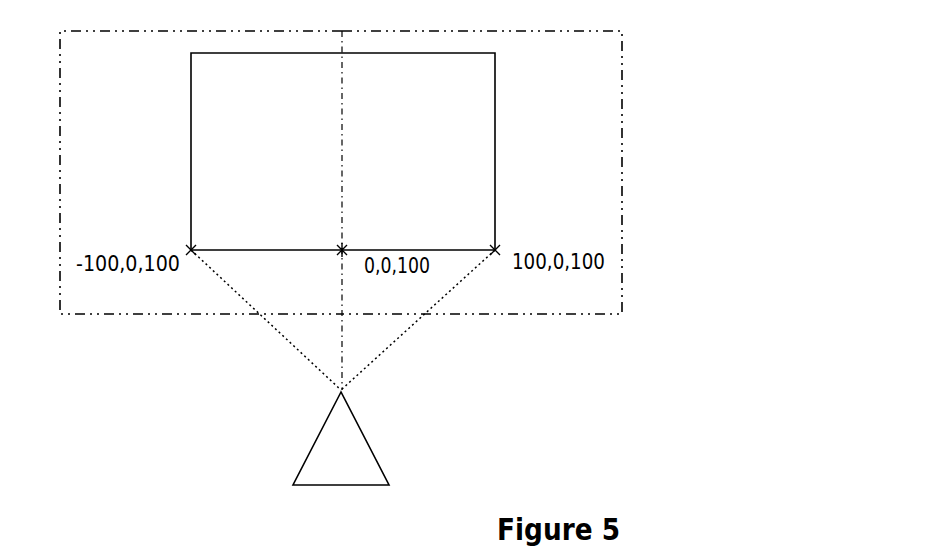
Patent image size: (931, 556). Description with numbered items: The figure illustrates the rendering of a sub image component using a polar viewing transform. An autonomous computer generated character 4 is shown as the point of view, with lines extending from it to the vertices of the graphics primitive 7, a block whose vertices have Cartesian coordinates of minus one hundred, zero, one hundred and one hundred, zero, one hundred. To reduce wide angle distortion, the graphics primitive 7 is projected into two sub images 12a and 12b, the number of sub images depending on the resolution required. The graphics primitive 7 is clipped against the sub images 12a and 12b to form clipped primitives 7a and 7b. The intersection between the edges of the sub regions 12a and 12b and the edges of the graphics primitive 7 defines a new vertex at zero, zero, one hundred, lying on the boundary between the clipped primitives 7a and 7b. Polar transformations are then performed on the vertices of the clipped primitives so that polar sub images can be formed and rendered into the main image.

The graphics primitive 7 is at (249, 151).
The clipped primitive 7a is at (266, 151).
The clipped primitive 7b is at (418, 151).
The sub image 12a is at (201, 172).
The sub image 12b is at (482, 172).
The autonomous computer generated character 4 is at (341, 438).